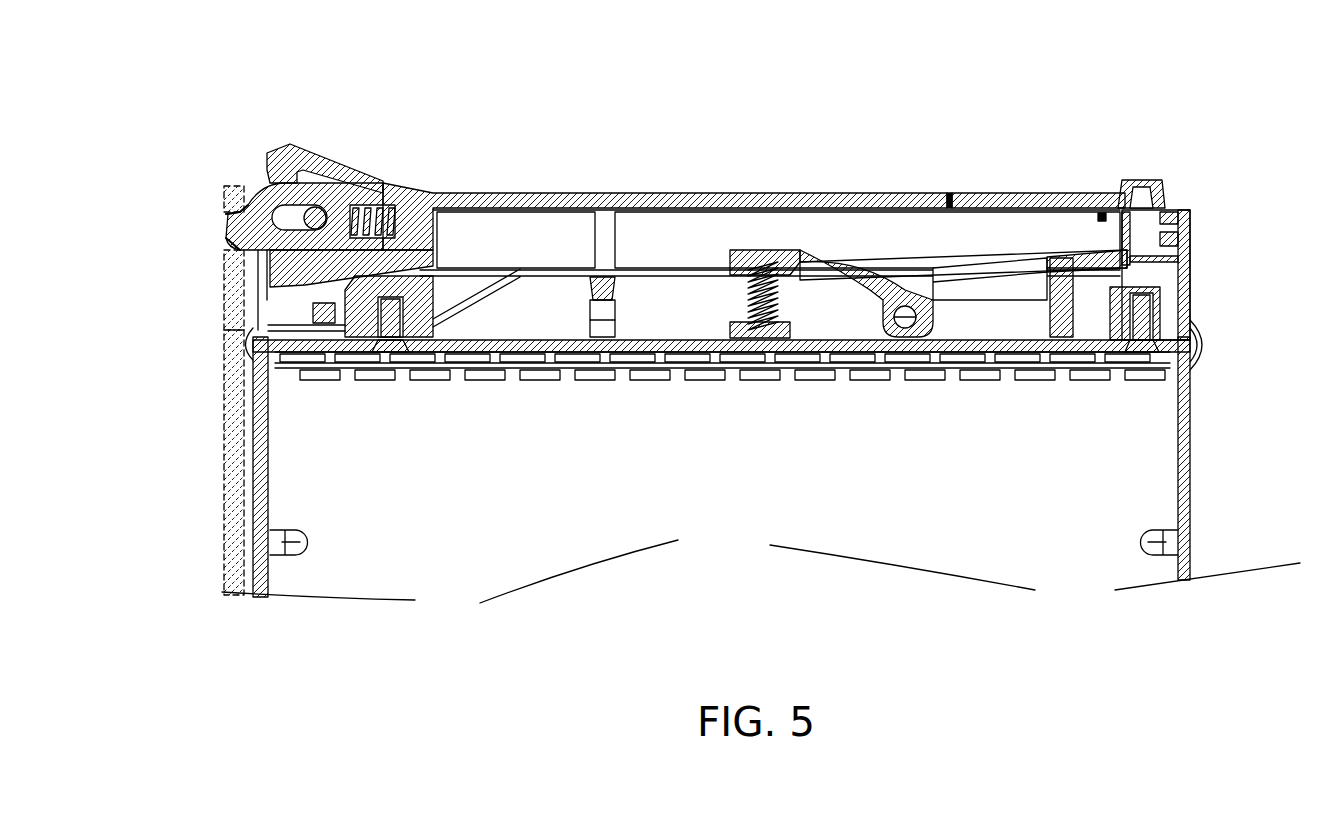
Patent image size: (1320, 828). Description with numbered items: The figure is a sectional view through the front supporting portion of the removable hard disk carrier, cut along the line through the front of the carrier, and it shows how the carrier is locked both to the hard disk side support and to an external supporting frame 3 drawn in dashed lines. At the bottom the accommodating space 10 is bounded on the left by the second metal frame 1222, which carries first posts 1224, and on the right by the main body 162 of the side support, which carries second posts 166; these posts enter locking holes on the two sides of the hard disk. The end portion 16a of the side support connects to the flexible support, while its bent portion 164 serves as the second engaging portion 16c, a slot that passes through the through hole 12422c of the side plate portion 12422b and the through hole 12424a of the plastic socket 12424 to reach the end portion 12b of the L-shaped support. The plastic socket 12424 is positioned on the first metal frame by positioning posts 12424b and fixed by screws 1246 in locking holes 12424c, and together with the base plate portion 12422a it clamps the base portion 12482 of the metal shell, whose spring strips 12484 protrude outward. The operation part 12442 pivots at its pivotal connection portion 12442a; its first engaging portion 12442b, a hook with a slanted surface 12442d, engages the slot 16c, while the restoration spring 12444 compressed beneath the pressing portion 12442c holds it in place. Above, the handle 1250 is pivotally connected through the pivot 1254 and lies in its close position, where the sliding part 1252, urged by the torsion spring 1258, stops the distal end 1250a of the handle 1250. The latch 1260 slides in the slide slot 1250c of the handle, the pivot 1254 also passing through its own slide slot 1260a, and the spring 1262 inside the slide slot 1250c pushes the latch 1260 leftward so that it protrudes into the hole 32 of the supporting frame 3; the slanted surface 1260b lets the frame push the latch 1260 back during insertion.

The external supporting frame 3 is at (236, 375).
The hole 32 is at (224, 264).
The accommodating space 10 is at (1133, 497).
The end portion of the L-shaped support 12b is at (1170, 170).
The end portion of the side support 16a is at (1198, 333).
The second engaging portion 16c is at (1128, 262).
The main body 162 is at (1185, 537).
The bent portion 164 is at (1192, 272).
The second posts 166 is at (1145, 537).
The second metal frame 1222 is at (268, 490).
The first posts 1224 is at (300, 540).
The screws 1246 is at (388, 345).
The handle 1250 is at (640, 195).
The distal end of the handle 1250a is at (960, 195).
The slide slot of the handle 1250c is at (373, 200).
The sliding part 1252 is at (1005, 195).
The pivot 1254 is at (318, 212).
The torsion spring 1258 is at (1170, 215).
The latch 1260 is at (262, 192).
The slide slot of the latch 1260a is at (290, 205).
The slanted surface 1260b is at (228, 230).
The spring 1262 is at (420, 235).
The base plate portion 12422a is at (683, 355).
The side plate portion 12422b is at (1175, 218).
The through hole 12422c is at (1175, 240).
The plastic socket 12424 is at (703, 240).
The through hole 12424a is at (1165, 260).
The positioning posts 12424b is at (298, 352).
The locking holes 12424c is at (430, 290).
The operation part 12442 is at (910, 250).
The pivotal connection portion 12442a is at (905, 355).
The first engaging portion 12442b is at (1130, 253).
The pressing portion 12442c is at (812, 250).
The slanted surface 12442d is at (1085, 380).
The restoration spring 12444 is at (785, 300).
The base portion 12482 is at (687, 380).
The spring strips 12484 is at (250, 345).